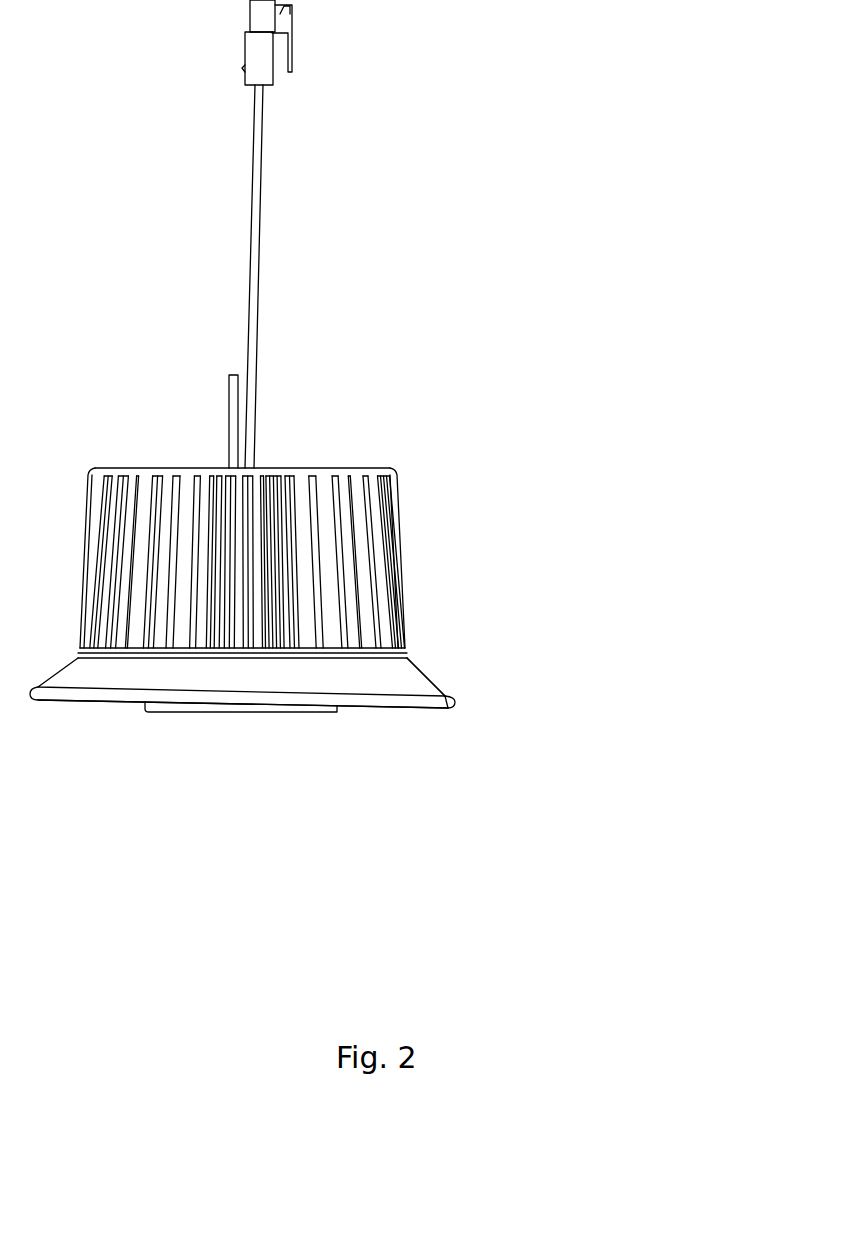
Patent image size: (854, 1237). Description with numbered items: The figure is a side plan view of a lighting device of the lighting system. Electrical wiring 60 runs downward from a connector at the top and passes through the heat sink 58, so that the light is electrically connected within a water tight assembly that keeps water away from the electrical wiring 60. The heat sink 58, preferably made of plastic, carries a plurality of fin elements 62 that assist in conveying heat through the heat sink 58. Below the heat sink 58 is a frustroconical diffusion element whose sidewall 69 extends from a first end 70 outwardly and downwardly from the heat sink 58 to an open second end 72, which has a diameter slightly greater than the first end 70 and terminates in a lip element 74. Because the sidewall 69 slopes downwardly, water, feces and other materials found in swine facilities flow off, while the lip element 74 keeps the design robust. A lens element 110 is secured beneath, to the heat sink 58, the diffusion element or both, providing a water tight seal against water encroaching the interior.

The heat sink 58 is at (317, 544).
The electrical wiring 60 is at (258, 217).
The fin elements 62 is at (398, 493).
The sidewall 69 is at (418, 696).
The first end 70 is at (405, 652).
The open second end 72 is at (450, 710).
The lip element 74 is at (448, 702).
The lens element 110 is at (345, 713).